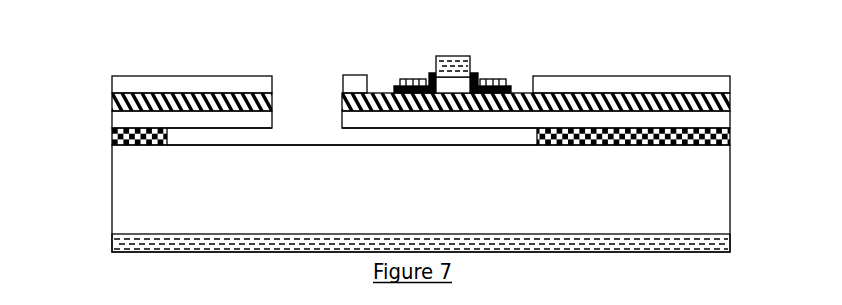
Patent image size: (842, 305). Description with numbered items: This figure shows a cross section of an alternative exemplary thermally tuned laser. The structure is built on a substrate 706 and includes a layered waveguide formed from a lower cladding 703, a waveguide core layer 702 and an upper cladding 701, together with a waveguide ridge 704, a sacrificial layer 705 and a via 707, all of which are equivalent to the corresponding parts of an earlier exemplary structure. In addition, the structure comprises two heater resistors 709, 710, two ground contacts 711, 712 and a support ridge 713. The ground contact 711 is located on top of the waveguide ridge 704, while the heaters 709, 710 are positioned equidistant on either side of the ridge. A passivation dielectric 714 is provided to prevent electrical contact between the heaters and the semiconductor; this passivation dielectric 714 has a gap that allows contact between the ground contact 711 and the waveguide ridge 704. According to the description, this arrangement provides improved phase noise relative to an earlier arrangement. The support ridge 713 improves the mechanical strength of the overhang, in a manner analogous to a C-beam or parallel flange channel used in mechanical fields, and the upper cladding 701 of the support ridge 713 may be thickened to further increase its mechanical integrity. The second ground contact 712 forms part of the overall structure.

The upper cladding 701 is at (112, 85).
The waveguide core layer 702 is at (112, 102).
The lower cladding 703 is at (112, 119).
The waveguide ridge 704 is at (453, 77).
The sacrificial layer 705 is at (112, 137).
The substrate 706 is at (112, 162).
The via 707 is at (327, 118).
The heater resistor 709 is at (412, 80).
The heater resistor 710 is at (495, 82).
The ground contact 711 is at (453, 57).
The ground contact 712 is at (730, 241).
The support ridge 713 is at (353, 75).
The passivation dielectric 714 is at (508, 86).